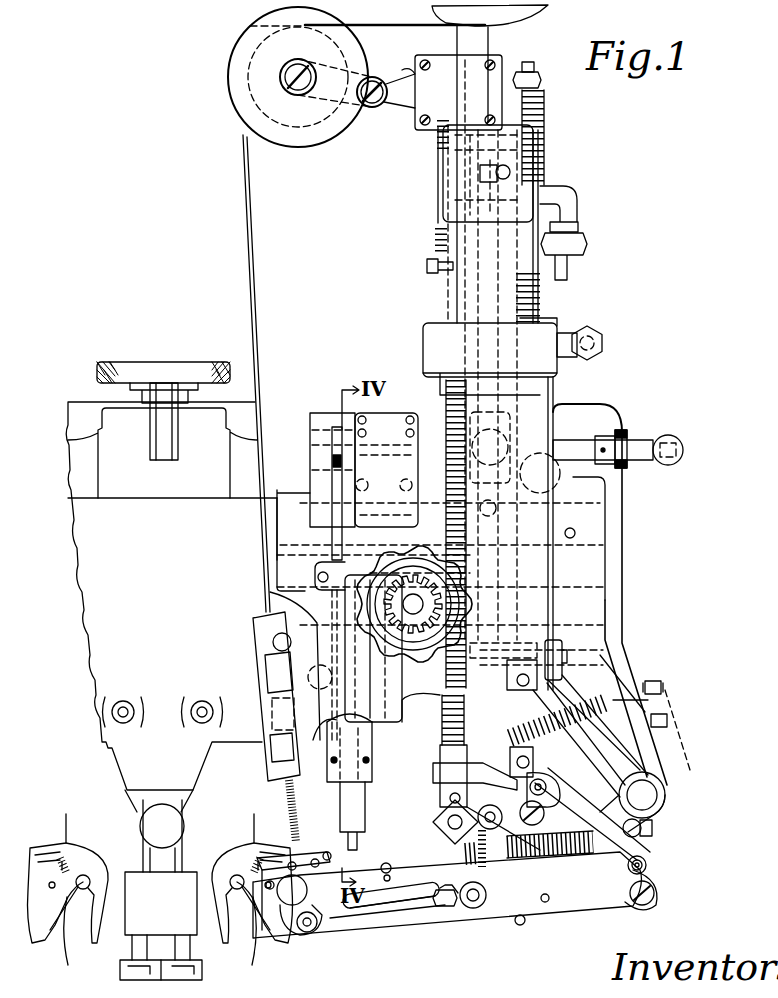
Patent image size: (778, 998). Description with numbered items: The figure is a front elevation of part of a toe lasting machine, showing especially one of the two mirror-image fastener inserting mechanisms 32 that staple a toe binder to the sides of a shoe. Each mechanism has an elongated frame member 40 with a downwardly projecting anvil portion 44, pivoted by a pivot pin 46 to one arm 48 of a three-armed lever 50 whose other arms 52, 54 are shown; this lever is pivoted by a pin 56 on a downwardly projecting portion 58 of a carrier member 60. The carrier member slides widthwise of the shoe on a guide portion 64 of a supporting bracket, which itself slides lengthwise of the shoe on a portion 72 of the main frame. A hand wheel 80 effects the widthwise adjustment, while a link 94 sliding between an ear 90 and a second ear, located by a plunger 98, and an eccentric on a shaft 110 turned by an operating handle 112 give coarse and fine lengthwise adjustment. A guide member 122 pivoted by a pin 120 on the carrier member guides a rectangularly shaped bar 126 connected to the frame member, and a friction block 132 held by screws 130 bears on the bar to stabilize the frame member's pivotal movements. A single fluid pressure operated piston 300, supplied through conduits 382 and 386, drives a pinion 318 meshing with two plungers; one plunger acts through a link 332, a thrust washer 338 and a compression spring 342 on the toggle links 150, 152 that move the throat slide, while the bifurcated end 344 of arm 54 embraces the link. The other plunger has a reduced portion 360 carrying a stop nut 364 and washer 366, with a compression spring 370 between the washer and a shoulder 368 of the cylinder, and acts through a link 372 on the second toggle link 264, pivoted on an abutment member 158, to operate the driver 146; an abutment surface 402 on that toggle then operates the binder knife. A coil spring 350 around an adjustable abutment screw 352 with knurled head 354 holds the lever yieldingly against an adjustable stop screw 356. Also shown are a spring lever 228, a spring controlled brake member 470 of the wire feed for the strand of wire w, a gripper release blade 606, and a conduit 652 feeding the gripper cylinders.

The stop nut 364 is at (548, 54).
The washer 366 is at (541, 80).
The compression spring 370 is at (545, 114).
The fluid pressure operated piston 300 is at (443, 204).
The conduit 382 is at (578, 205).
The conduit 652 is at (573, 258).
The portion of reduced diameter 360 is at (545, 270).
The shoulder 368 is at (560, 324).
The conduit 386 is at (604, 343).
The strand of wire w is at (258, 255).
The pinion 318 is at (548, 375).
The plunger 98 is at (577, 446).
The shaft 110 is at (637, 445).
The operating handle 112 is at (684, 450).
The link 94 is at (340, 428).
The ear 90 is at (318, 432).
The guide portion 64 is at (277, 525).
The carrier member 60 is at (606, 604).
The portion of the main frame 72 is at (160, 604).
The pin 120 is at (318, 576).
The guide member 122 is at (272, 616).
The hand wheel 80 is at (470, 598).
The spring controlled brake member 470 is at (272, 713).
The coil spring 350 is at (562, 662).
The adjustable abutment screw 352 is at (656, 681).
The link 332 is at (445, 677).
The link 372 is at (520, 680).
The compression spring 342 is at (467, 707).
The knurled head 354 is at (520, 736).
The arm 52 is at (662, 700).
The adjustable stop screw 356 is at (670, 722).
The downwardly projecting portion 58 is at (672, 760).
The arm 54 is at (573, 772).
The pin 56 is at (655, 790).
The three-armed lever 50 is at (668, 792).
The arm 48 is at (642, 830).
The friction block 132 is at (372, 726).
The screws 130 is at (332, 758).
The thrust washer 338 is at (440, 748).
The bifurcated end 344 is at (468, 778).
The link 152 is at (448, 798).
The link 150 is at (447, 822).
The rectangularly shaped bar 126 is at (343, 792).
The spring lever 228 is at (346, 822).
The second toggle link 264 is at (612, 850).
The abutment member 158 is at (648, 870).
The pivot pin 46 is at (656, 893).
The elongated frame member 40 is at (390, 860).
The fastener inserting mechanism 32 is at (96, 852).
The anvil portion 44 is at (70, 925).
The driver 146 is at (400, 915).
The abutment surface 402 is at (425, 935).
The gripper release blade 606 is at (472, 910).